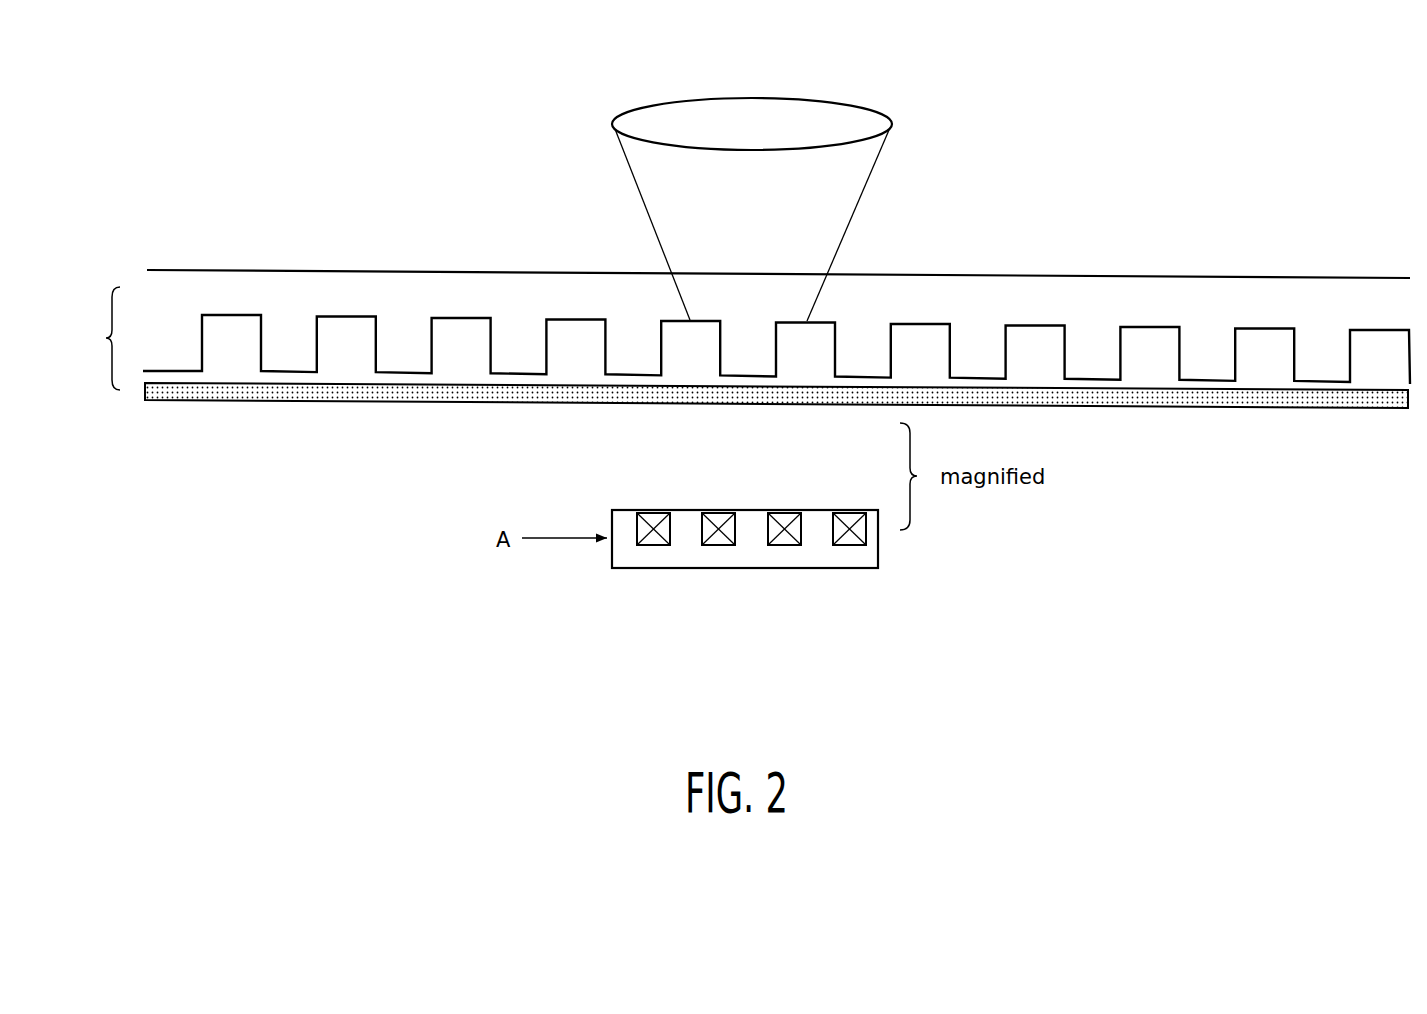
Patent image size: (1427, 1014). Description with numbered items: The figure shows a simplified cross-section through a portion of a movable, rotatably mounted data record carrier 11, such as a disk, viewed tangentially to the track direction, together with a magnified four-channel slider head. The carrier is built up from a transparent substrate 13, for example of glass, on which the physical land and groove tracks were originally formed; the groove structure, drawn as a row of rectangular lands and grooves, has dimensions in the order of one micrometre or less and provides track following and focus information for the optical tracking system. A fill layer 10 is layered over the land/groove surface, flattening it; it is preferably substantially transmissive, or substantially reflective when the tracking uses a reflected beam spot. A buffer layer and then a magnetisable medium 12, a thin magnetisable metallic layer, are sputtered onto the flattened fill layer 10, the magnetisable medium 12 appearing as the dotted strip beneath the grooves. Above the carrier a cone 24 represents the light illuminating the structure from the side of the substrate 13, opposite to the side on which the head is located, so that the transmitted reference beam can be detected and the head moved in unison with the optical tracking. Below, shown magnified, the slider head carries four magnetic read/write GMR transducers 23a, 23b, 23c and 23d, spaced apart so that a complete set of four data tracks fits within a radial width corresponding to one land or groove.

The fill layer 10 is at (220, 352).
The data record carrier 11 is at (95, 338).
The magnetisable medium 12 is at (195, 402).
The transparent substrate 13 is at (307, 287).
The illumination light cone 24 is at (873, 100).
The magnetic read/write GMR transducer 23a is at (653, 553).
The magnetic read/write GMR transducer 23b is at (717, 552).
The magnetic read/write GMR transducer 23c is at (787, 553).
The magnetic read/write GMR transducer 23d is at (852, 553).